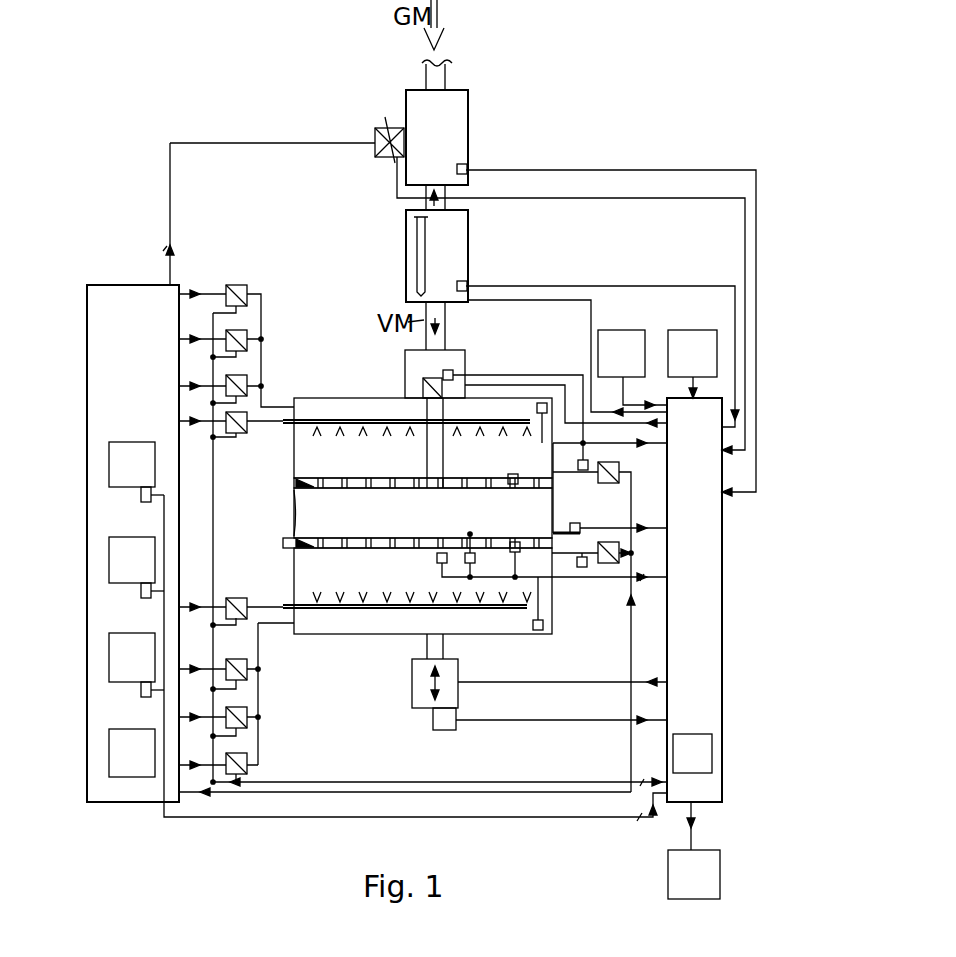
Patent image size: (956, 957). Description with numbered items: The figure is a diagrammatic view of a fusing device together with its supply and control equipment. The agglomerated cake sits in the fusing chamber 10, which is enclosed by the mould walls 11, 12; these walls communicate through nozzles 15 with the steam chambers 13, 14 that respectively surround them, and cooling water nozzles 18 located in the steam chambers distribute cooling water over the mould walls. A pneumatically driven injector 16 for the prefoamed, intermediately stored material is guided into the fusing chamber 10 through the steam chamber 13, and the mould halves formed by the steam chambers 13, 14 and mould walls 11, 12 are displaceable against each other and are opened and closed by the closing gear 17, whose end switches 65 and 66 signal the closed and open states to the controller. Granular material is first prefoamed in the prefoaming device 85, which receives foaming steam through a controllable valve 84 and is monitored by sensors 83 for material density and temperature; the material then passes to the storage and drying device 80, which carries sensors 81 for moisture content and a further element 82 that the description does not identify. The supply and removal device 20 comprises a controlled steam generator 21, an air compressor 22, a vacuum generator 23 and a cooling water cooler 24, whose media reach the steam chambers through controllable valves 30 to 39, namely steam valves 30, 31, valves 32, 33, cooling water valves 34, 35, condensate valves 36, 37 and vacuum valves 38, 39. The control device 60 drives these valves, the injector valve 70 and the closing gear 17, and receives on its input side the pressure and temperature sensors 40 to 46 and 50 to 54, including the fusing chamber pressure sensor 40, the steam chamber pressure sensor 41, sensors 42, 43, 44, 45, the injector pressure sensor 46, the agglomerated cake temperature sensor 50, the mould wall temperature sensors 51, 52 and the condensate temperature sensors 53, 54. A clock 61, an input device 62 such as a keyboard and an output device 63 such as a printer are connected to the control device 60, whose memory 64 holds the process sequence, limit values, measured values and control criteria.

The fusing chamber 10 is at (349, 525).
The mould wall 11 is at (298, 484).
The mould wall 12 is at (296, 545).
The steam chamber 13 is at (345, 473).
The steam chamber 14 is at (349, 580).
The nozzles 15 is at (310, 545).
The injector 16 is at (405, 365).
The closing gear 17 is at (412, 680).
The cooling water nozzles 18 is at (303, 603).
The supply and removal device 20 is at (148, 333).
The controlled steam generator 21 is at (144, 470).
The air compressor 22 is at (144, 573).
The vacuum generator 23 is at (144, 668).
The cooling water cooler 24 is at (144, 763).
The steam valve 30 is at (221, 395).
The steam valve 31 is at (236, 694).
The controllable valve 32 is at (221, 351).
The controllable valve 33 is at (219, 711).
The cooling water valve 34 is at (231, 433).
The cooling water valve 35 is at (226, 600).
The condensate valve 36 is at (622, 470).
The condensate valve 37 is at (633, 553).
The vacuum valve 38 is at (236, 533).
The vacuum valve 39 is at (423, 760).
The fusing chamber pressure sensor 40 is at (440, 565).
The steam chamber pressure sensor 41 is at (542, 403).
The sensor 42 is at (537, 632).
The sensor 43 is at (141, 496).
The sensor 44 is at (141, 592).
The sensor 45 is at (141, 690).
The injector pressure sensor 46 is at (448, 370).
The agglomerated cake temperature sensor 50 is at (476, 565).
The mould wall temperature sensor 51 is at (508, 478).
The mould wall temperature sensor 52 is at (521, 553).
The condensate temperature sensor 53 is at (584, 471).
The condensate temperature sensor 54 is at (584, 568).
The control device 60 is at (702, 428).
The clock 61 is at (701, 363).
The input device 62 is at (629, 363).
The output device 63 is at (703, 885).
The memory 64 is at (702, 765).
The end switch 65 is at (586, 508).
The end switch 66 is at (433, 720).
The injector valve 70 is at (423, 388).
The storage and drying device 80 is at (455, 253).
The moisture content sensors 81 is at (467, 284).
The thermometer 82 is at (417, 270).
The sensors 83 is at (467, 172).
The controllable valve 84 is at (378, 140).
The prefoaming device 85 is at (448, 121).